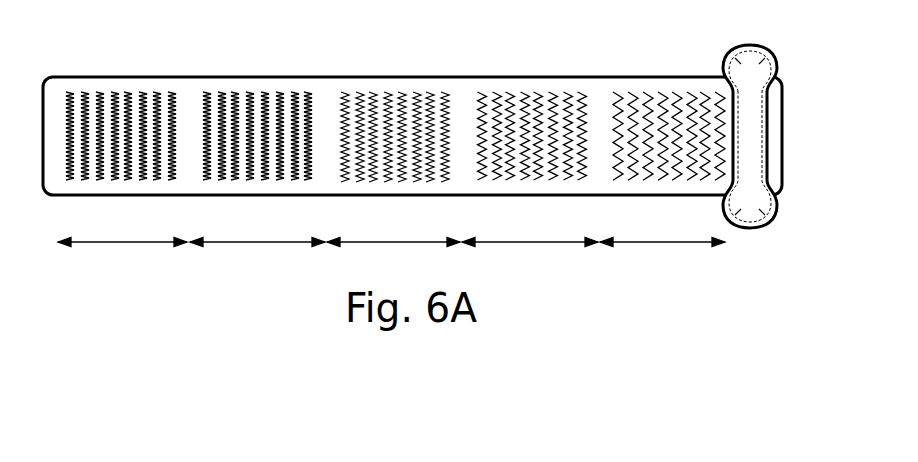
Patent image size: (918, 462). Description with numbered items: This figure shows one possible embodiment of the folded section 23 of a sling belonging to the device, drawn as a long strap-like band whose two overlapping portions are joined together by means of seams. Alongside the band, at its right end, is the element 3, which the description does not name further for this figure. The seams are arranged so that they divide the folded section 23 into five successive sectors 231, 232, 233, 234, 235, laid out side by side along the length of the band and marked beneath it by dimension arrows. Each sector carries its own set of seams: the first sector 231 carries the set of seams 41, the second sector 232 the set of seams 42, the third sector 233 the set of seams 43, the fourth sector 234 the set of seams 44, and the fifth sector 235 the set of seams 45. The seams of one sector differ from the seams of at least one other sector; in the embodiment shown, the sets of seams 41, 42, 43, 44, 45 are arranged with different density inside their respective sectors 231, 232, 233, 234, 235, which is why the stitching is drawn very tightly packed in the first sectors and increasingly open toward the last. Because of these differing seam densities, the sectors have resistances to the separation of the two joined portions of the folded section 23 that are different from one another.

The folded portion 23 is at (452, 90).
The buckle 3 is at (745, 229).
The set of seams 41 is at (130, 97).
The set of seams 42 is at (265, 97).
The set of seams 43 is at (400, 97).
The set of seams 44 is at (538, 97).
The set of seams 45 is at (688, 97).
The sector 231 is at (122, 229).
The sector 232 is at (257, 229).
The sector 233 is at (393, 229).
The sector 234 is at (530, 229).
The sector 235 is at (662, 229).